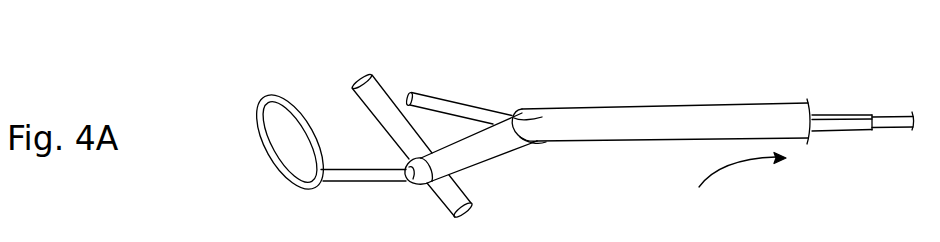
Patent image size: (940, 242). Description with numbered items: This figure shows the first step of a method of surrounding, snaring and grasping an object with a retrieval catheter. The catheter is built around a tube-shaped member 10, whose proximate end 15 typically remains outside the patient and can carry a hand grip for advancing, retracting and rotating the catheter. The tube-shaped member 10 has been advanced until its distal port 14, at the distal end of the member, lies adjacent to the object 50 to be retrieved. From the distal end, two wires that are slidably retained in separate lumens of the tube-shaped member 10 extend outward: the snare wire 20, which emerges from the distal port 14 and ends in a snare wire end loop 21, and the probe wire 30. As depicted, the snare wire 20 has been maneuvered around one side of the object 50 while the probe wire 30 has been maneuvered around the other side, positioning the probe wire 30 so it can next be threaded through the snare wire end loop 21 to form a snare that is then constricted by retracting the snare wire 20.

The tube-shaped member 10 is at (648, 120).
The distal port 14 is at (412, 177).
The proximate end 15 is at (736, 185).
The snare wire 20 is at (368, 177).
The snare wire end loop 21 is at (268, 140).
The probe wire 30 is at (447, 110).
The object 50 is at (368, 92).